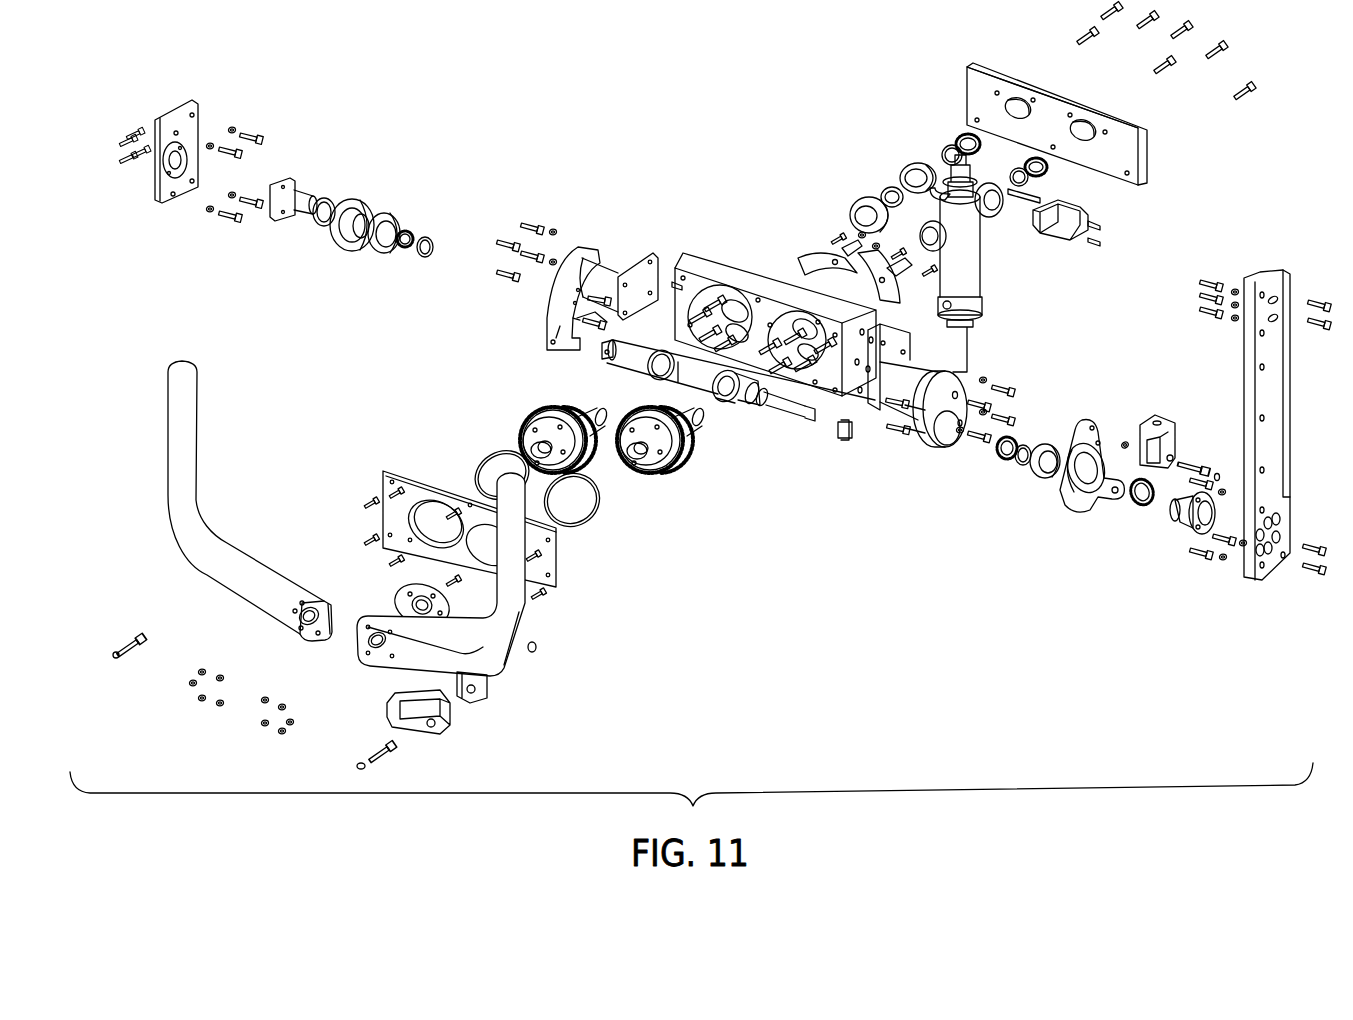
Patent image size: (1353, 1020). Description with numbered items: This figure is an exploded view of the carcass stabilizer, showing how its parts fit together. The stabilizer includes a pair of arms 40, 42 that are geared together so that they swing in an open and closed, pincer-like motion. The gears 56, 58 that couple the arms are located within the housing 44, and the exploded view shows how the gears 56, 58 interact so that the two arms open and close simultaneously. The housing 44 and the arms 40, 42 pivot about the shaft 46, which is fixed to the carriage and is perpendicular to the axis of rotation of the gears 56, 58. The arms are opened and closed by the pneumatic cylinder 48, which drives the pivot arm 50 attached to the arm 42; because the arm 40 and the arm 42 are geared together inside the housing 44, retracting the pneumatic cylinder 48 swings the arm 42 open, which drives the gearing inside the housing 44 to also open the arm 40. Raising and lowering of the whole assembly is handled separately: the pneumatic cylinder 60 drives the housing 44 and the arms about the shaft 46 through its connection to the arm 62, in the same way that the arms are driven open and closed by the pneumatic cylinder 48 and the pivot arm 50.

The arm 40 is at (185, 397).
The arm 42 is at (527, 613).
The housing 44 is at (722, 263).
The shaft 46 is at (903, 383).
The pneumatic cylinder 48 is at (653, 376).
The pivot arm 50 is at (487, 683).
The gear 56 is at (688, 460).
The gear 58 is at (521, 422).
The pneumatic cylinder 60 is at (967, 267).
The arm 62 is at (1107, 497).